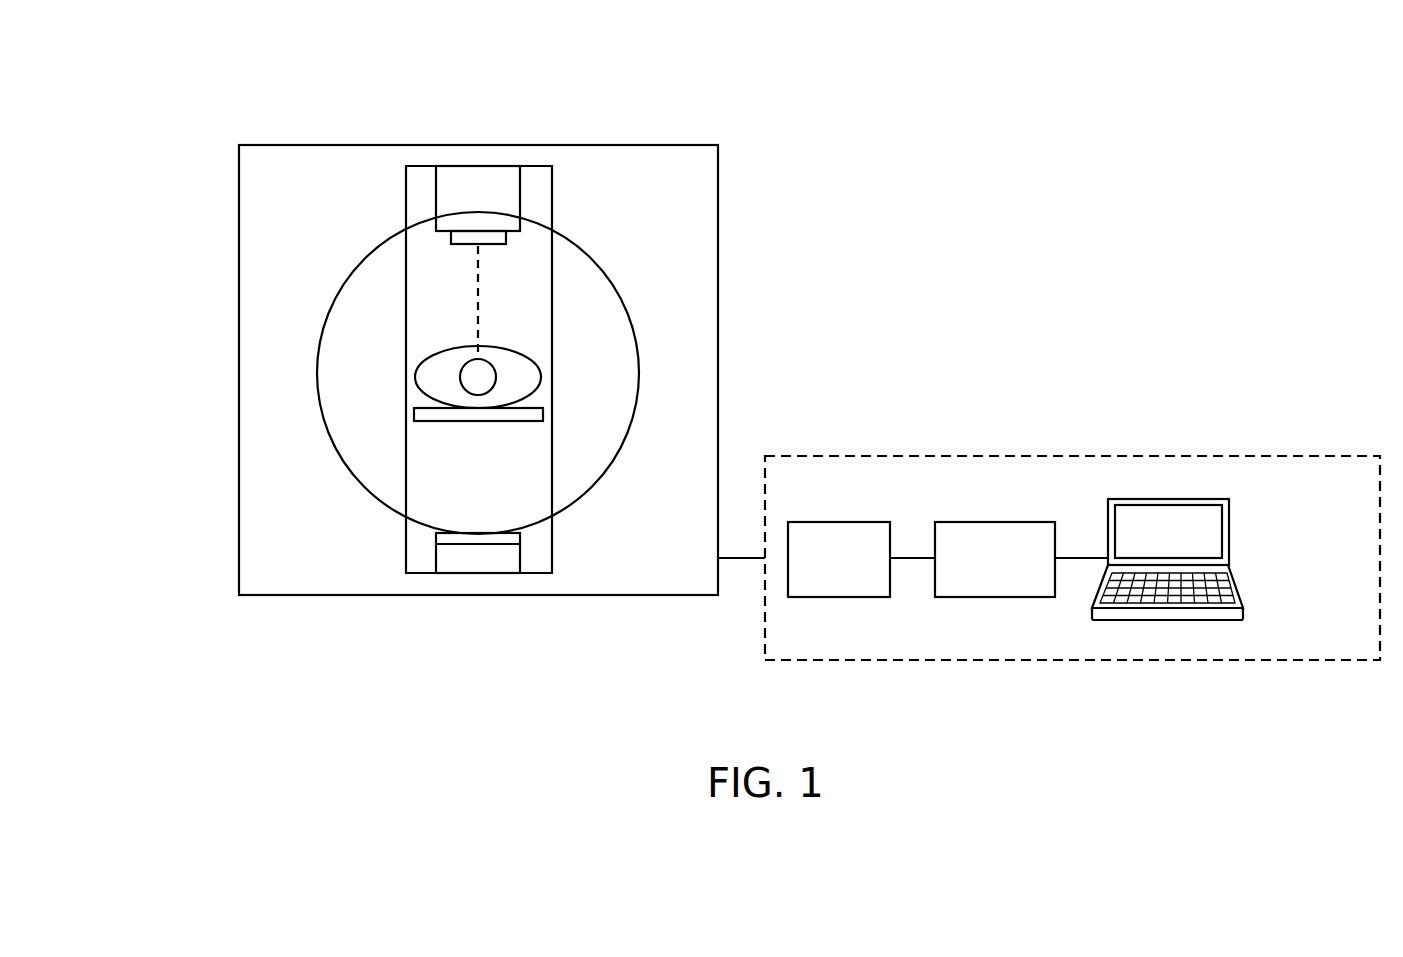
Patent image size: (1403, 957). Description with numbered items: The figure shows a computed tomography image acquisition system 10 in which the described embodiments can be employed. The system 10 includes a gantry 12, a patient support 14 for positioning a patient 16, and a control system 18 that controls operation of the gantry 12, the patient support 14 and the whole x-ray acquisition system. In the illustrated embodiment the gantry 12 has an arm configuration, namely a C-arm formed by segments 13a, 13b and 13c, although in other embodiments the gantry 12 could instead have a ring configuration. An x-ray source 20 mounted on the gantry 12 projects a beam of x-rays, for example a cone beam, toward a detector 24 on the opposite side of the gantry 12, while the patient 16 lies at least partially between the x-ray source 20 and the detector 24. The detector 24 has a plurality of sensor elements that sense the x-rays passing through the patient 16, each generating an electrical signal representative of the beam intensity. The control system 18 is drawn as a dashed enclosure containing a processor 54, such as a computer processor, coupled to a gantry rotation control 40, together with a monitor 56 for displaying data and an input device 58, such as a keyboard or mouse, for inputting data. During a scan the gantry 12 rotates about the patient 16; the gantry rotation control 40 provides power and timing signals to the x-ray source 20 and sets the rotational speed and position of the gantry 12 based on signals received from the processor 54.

The computed tomography image acquisition system 10 is at (838, 128).
The gantry 12 is at (552, 198).
The segment 13a is at (453, 178).
The segment 13b is at (425, 281).
The segment 13c is at (500, 562).
The patient support 14 is at (532, 422).
The patient 16 is at (532, 378).
The control system 18 is at (990, 456).
The x-ray source 20 is at (487, 203).
The detector 24 is at (463, 532).
The gantry rotation control 40 is at (855, 577).
The processor 54 is at (1011, 577).
The monitor 56 is at (1229, 525).
The input device 58 is at (1237, 597).